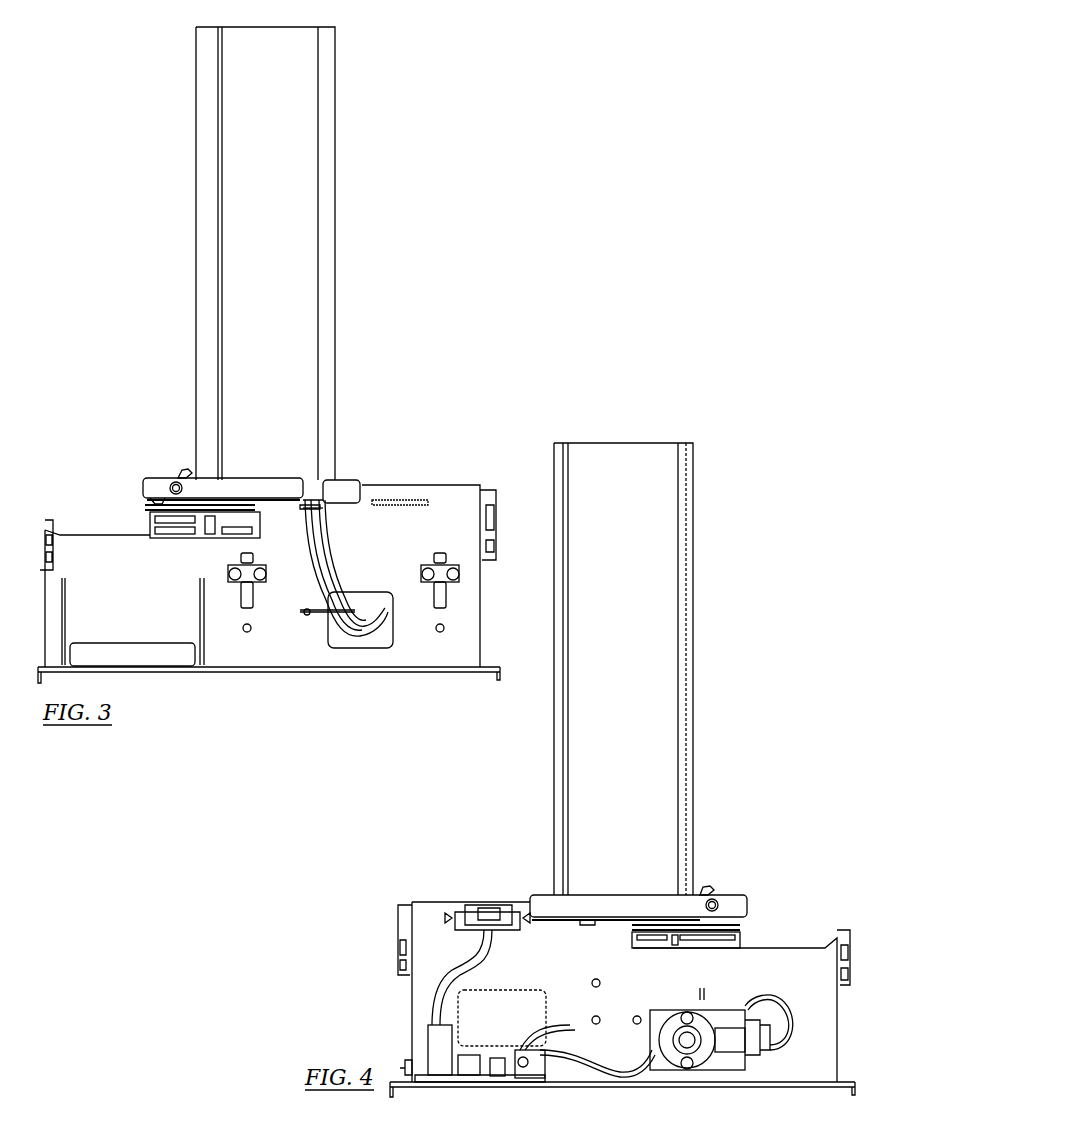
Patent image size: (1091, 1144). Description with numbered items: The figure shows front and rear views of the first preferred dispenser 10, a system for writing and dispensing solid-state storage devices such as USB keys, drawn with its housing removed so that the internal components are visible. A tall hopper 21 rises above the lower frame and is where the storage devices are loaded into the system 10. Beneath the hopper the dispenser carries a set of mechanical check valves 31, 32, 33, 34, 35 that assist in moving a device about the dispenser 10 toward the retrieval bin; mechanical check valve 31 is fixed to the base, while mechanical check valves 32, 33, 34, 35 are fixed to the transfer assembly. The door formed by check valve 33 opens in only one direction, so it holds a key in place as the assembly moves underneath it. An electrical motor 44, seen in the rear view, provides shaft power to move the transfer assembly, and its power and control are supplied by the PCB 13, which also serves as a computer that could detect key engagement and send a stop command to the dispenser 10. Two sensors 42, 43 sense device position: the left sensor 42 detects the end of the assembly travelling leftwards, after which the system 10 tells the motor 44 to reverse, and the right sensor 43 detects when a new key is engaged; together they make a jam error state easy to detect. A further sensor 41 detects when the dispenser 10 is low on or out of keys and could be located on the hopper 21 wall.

In FIG. 3, the system 10 is at (280, 369).
In FIG. 4, the system 10 is at (605, 783).
In FIG. 3, the hopper 21 is at (300, 157).
In FIG. 3, the mechanical check valve 31 is at (175, 475).
In FIG. 4, the mechanical check valve 31 is at (715, 898).
In FIG. 3, the mechanical check valve 32 is at (150, 515).
In FIG. 3, the mechanical check valve 33 is at (215, 515).
In FIG. 3, the sensor 41 is at (335, 495).
In FIG. 3, the sensor 42 is at (250, 600).
In FIG. 3, the sensor 43 is at (443, 600).
In FIG. 4, the PCB 13 is at (408, 1065).
In FIG. 4, the mechanical check valve 34 is at (740, 937).
In FIG. 4, the mechanical check valve 35 is at (690, 930).
In FIG. 4, the electrical motor 44 is at (700, 1058).